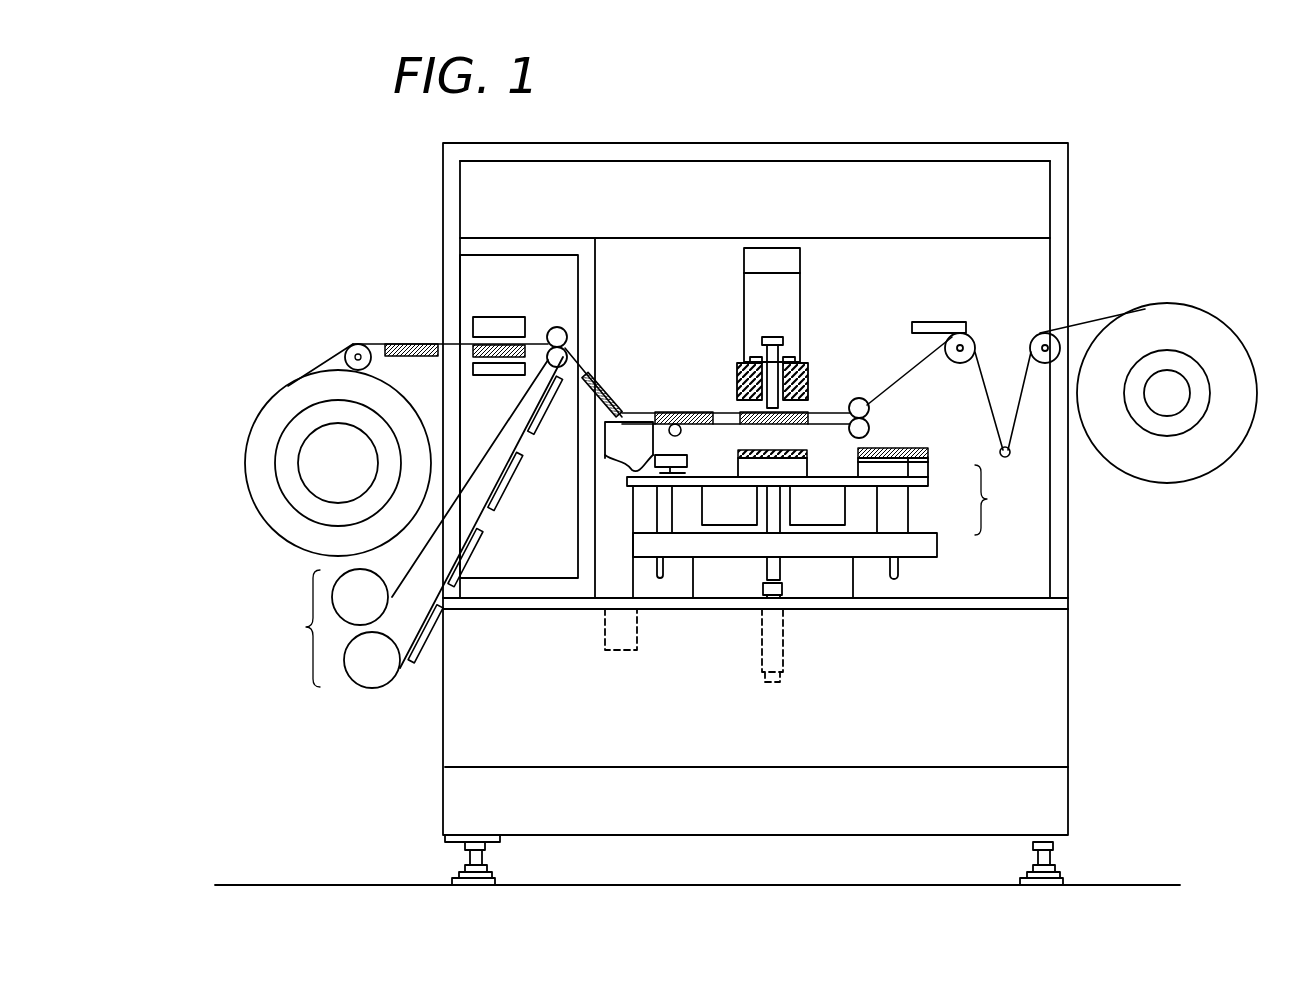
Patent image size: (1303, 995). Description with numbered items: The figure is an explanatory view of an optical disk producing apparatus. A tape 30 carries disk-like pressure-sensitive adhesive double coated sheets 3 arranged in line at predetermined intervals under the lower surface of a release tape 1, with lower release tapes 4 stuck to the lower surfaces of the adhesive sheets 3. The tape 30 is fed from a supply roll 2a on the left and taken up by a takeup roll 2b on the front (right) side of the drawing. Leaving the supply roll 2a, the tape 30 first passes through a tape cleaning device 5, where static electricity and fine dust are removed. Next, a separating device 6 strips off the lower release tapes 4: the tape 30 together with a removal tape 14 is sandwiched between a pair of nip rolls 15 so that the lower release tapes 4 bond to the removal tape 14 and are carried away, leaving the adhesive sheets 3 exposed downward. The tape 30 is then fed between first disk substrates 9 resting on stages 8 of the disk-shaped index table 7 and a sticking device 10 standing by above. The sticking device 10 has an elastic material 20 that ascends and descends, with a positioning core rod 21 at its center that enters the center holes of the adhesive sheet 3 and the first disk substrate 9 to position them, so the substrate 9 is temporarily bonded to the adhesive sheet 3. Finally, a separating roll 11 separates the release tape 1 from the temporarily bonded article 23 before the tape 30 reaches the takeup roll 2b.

The release tape 1 is at (727, 413).
The supply roll 2a is at (251, 495).
The takeup roll 2b is at (1230, 457).
The adhesive double coated sheet 3 is at (675, 412).
The lower release tape 4 is at (545, 414).
The tape cleaning device 5 is at (498, 318).
The separating device 6 is at (342, 628).
The index table 7 is at (860, 486).
The stage 8 is at (753, 470).
The first disk substrate 9 is at (740, 449).
The sticking device 10 is at (738, 289).
The separating roll 11 is at (862, 398).
The removal tape 14 is at (482, 460).
The nip rolls 15 is at (557, 326).
The elastic material 20 is at (808, 392).
The positioning core rod 21 is at (763, 350).
The temporarily bonded article 23 is at (939, 496).
The tape 30 is at (398, 338).